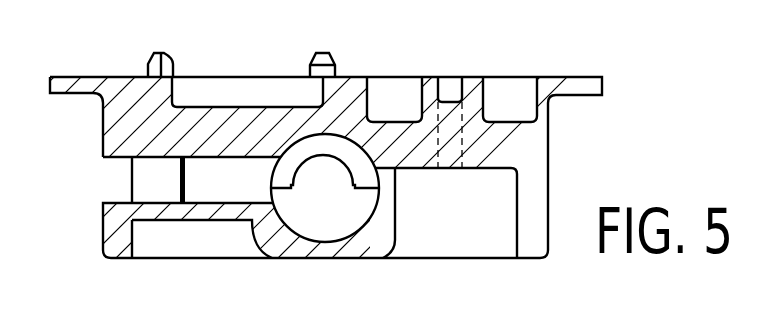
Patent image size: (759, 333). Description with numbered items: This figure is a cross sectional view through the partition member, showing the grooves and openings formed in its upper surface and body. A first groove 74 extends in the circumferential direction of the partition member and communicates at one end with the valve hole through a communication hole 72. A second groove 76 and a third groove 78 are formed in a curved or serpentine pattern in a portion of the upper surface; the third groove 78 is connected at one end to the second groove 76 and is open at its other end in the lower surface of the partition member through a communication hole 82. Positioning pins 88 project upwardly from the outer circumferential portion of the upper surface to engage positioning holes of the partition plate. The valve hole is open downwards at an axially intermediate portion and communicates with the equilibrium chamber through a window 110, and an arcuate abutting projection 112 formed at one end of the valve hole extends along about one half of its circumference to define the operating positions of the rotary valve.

The communication hole 72 is at (229, 205).
The first groove 74 is at (116, 157).
The second groove 76 is at (524, 95).
The third groove 78 is at (449, 78).
The communication hole 82 is at (447, 128).
The positioning pins 88 is at (164, 53).
The window 110 is at (283, 214).
The arcuate abutting projection 112 is at (343, 157).